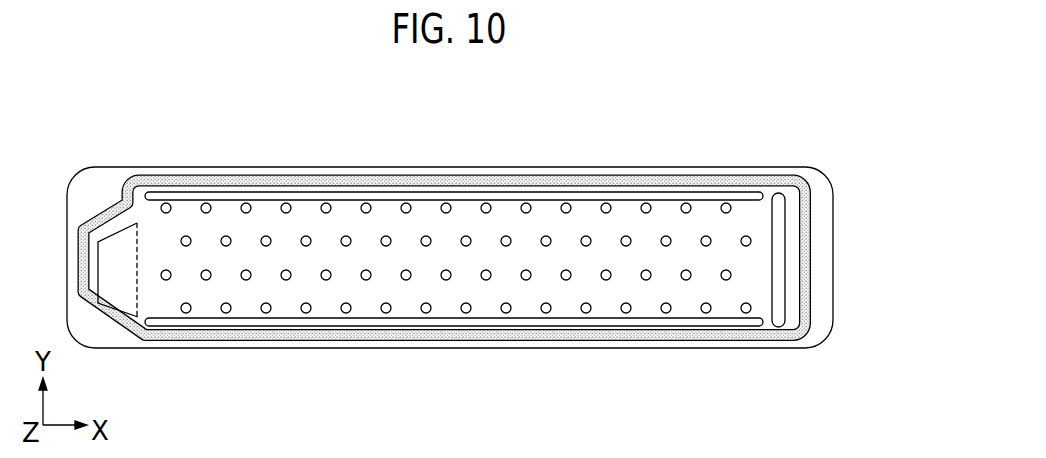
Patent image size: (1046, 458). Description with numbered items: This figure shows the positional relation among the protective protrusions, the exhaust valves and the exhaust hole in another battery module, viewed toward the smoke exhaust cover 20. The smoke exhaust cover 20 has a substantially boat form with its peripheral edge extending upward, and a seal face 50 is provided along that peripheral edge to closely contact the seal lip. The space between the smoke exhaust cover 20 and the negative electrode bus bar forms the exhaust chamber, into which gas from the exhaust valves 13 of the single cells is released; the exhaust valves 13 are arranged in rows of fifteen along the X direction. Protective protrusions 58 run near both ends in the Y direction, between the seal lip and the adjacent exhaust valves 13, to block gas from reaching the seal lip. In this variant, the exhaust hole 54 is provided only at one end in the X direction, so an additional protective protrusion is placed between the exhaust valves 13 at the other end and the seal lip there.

The smoke exhaust cover 20 is at (641, 148).
The seal face 50 is at (513, 338).
The exhaust hole 54 is at (103, 236).
The protective protrusion 58 is at (366, 199).
The exhaust valve 13 is at (506, 238).